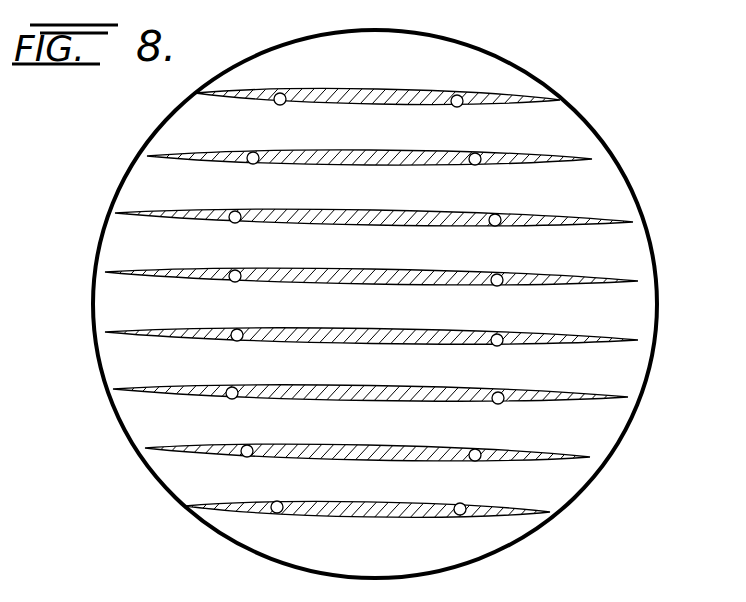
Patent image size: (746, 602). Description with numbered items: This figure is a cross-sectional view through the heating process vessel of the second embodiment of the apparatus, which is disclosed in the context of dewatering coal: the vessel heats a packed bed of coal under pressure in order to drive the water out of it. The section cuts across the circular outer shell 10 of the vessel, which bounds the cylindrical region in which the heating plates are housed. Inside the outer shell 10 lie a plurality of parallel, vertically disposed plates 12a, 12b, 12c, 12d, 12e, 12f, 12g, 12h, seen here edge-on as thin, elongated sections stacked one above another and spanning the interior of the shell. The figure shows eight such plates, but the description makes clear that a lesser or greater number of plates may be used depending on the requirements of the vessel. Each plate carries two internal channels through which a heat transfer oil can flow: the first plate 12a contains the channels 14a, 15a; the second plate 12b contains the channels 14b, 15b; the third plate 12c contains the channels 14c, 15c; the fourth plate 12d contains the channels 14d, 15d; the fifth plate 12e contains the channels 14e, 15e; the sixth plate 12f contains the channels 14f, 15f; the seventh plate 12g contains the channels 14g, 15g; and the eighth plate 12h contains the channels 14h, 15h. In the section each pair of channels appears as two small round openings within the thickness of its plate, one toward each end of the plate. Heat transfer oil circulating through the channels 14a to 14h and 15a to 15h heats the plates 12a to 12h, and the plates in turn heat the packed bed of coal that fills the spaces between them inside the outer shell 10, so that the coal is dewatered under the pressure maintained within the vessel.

The outer shell 10 is at (543, 66).
The plate 12a is at (400, 84).
The plate 12b is at (330, 152).
The plate 12c is at (320, 210).
The plate 12d is at (380, 268).
The plate 12e is at (330, 302).
The plate 12f is at (330, 362).
The plate 12g is at (384, 446).
The plate 12h is at (320, 500).
The channel 14a is at (280, 106).
The channel 14b is at (252, 165).
The channel 14c is at (235, 224).
The channel 14d is at (235, 283).
The channel 14e is at (237, 342).
The channel 14f is at (232, 400).
The channel 14g is at (247, 458).
The channel 14h is at (275, 514).
The channel 15a is at (458, 107).
The channel 15b is at (476, 165).
The channel 15c is at (496, 226).
The channel 15d is at (498, 286).
The channel 15e is at (498, 346).
The channel 15f is at (498, 404).
The channel 15g is at (477, 461).
The channel 15h is at (462, 515).